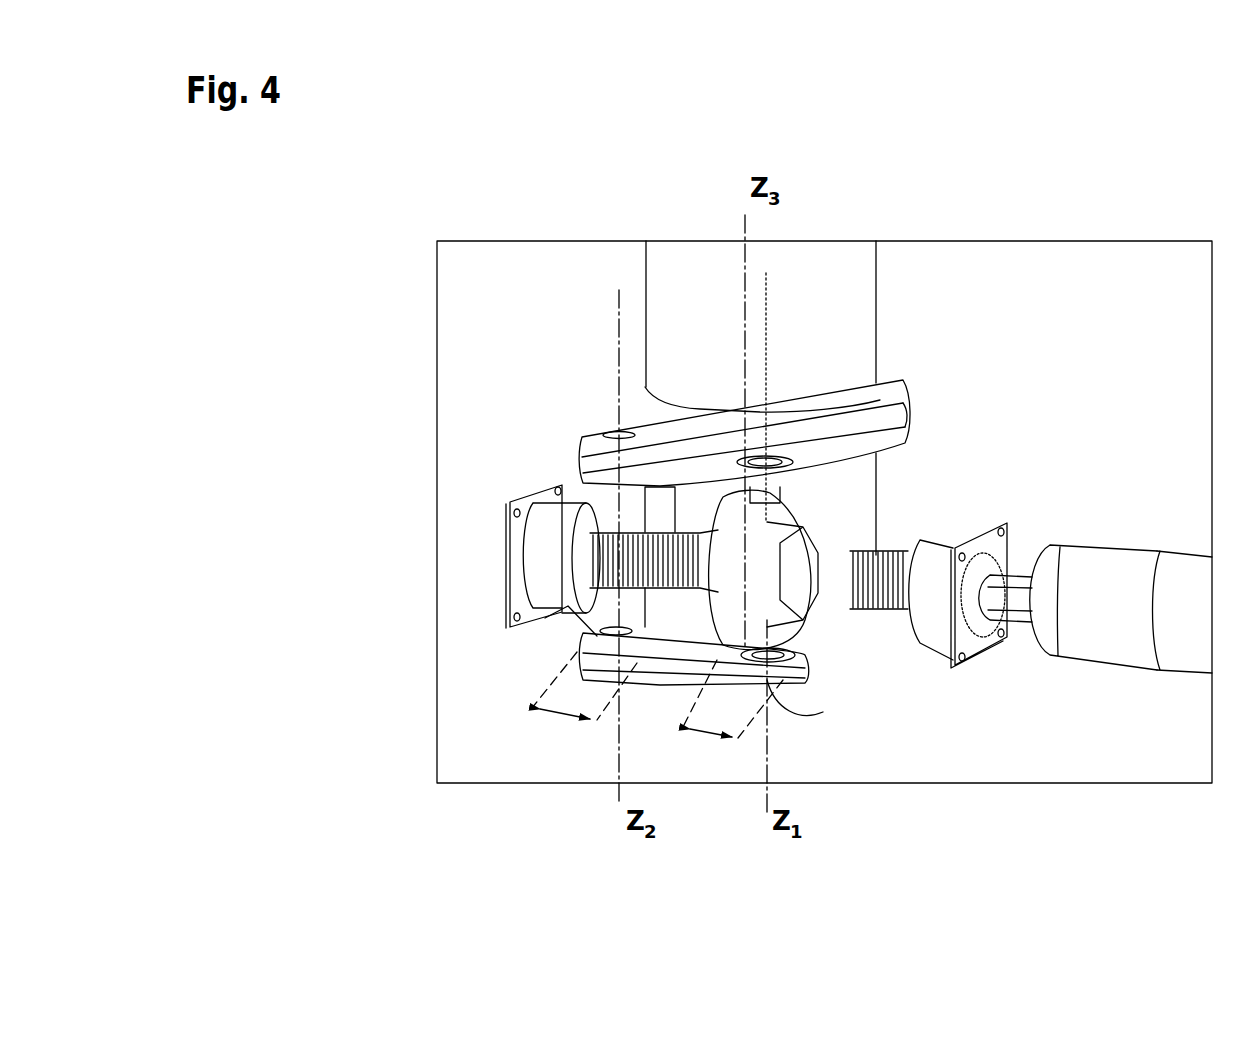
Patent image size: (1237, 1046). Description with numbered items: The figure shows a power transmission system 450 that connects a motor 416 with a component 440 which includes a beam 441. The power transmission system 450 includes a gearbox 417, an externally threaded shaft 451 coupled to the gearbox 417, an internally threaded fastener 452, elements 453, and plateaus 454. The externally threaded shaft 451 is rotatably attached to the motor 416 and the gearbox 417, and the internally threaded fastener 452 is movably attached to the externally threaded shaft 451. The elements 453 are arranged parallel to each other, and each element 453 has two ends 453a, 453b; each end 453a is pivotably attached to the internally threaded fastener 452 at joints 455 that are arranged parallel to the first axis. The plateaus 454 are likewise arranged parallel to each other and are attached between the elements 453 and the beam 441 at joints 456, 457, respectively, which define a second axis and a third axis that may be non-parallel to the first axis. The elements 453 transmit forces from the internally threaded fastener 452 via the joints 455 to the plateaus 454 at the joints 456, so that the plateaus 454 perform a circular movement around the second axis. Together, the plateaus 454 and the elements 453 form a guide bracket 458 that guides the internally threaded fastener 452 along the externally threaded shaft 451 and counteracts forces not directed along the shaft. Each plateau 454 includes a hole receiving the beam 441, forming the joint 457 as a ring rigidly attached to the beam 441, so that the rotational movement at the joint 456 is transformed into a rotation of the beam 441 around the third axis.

The component 440 is at (1030, 153).
The beam 441 is at (845, 300).
The joint 457 is at (762, 330).
The plateau 454 is at (887, 393).
The joint 455 is at (790, 451).
The element 453 is at (795, 478).
The end 453a is at (717, 712).
The end 453b is at (578, 716).
The internally threaded fastener 452 is at (740, 660).
The joint 456 is at (603, 430).
The guide bracket 458 is at (567, 458).
The power transmission system 450 is at (507, 683).
The externally threaded shaft 451 is at (897, 650).
The gearbox 417 is at (1100, 643).
The motor 416 is at (1187, 643).